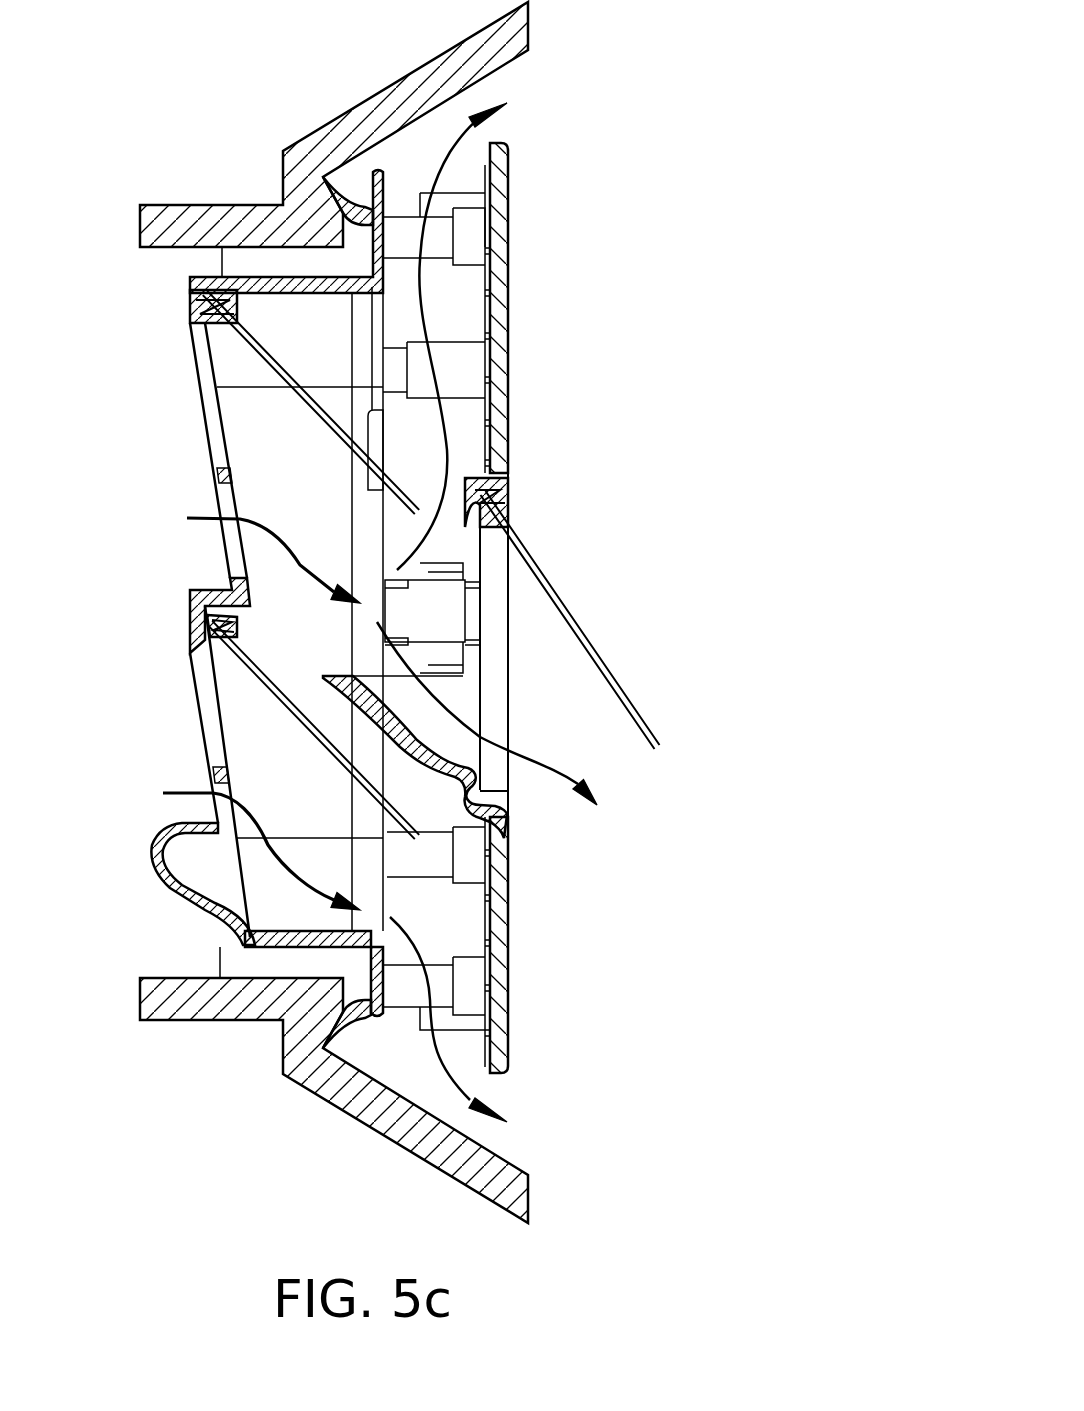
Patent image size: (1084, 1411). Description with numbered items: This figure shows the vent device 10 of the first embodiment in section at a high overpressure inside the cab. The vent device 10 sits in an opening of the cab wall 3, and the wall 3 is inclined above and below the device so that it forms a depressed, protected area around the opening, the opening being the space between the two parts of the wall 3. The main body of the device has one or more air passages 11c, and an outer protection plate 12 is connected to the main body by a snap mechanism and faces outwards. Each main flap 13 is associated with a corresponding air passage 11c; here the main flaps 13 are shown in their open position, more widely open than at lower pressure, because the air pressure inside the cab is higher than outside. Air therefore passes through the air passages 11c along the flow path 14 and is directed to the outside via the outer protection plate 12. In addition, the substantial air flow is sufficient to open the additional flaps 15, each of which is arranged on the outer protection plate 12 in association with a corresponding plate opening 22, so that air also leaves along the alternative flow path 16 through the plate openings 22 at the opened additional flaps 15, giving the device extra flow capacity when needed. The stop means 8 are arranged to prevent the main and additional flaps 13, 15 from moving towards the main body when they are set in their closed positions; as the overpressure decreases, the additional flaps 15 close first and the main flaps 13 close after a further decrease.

The cab wall 3 is at (408, 103).
The stop means 8 is at (215, 767).
The vent device 10 is at (655, 77).
The air passage 11c is at (237, 545).
The outer protection plate 12 is at (508, 937).
The main flap 13 is at (297, 402).
The flow path 14 is at (202, 515).
The additional flap 15 is at (577, 622).
The alternative flow path 16 is at (540, 753).
The plate opening 22 is at (495, 612).